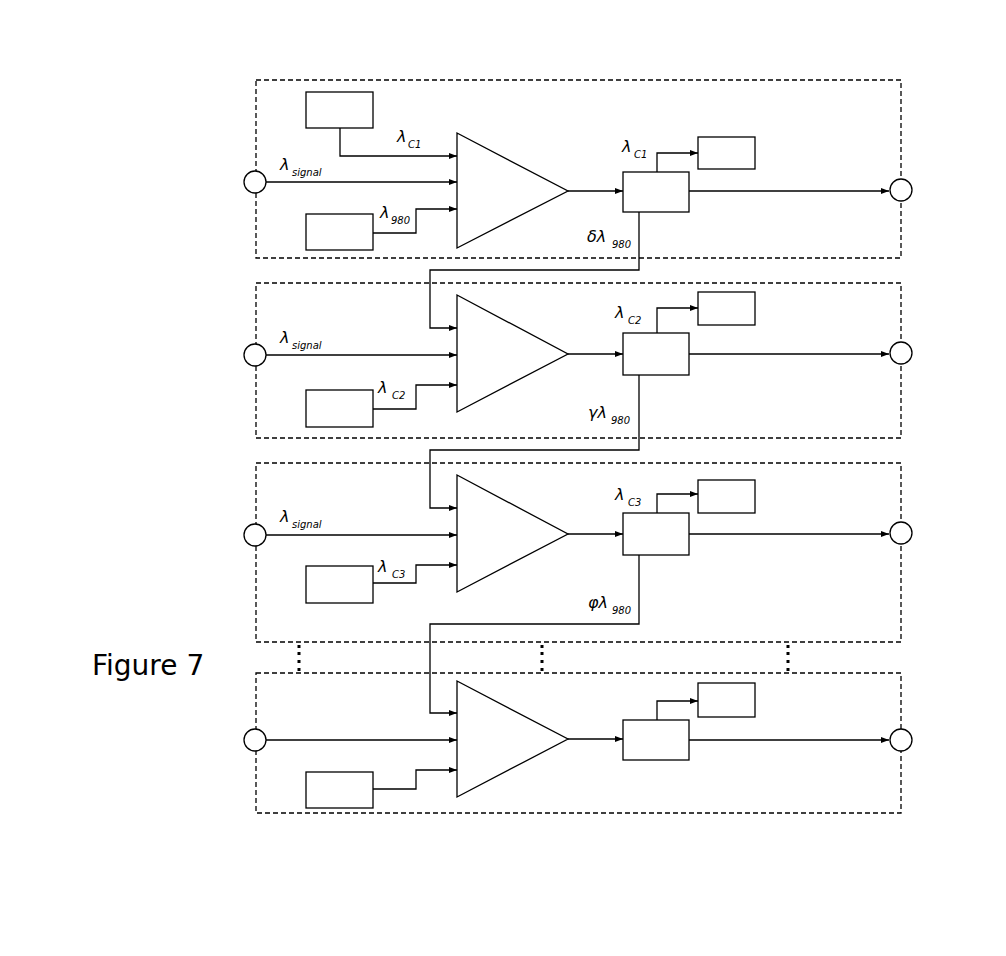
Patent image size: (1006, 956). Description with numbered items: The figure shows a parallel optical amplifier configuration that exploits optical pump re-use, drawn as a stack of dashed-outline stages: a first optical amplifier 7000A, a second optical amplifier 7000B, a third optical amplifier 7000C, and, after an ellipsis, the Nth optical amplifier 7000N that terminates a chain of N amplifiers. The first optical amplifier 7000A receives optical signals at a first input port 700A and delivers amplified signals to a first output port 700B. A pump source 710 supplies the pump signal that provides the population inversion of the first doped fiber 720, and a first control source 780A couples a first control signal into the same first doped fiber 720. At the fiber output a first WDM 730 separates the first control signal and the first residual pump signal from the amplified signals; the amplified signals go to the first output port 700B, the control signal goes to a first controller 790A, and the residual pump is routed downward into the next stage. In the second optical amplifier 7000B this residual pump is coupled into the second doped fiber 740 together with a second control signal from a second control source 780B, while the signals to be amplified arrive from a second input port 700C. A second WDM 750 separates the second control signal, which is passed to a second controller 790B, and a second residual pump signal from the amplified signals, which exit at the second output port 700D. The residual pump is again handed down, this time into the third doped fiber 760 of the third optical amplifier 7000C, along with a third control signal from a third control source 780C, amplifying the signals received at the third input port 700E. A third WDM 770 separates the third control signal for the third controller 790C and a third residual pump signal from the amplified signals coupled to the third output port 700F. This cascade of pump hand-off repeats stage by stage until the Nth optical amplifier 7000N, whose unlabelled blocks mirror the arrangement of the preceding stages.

The first input port 700A is at (225, 182).
The first output port 700B is at (932, 190).
The second input port 700C is at (225, 355).
The second output port 700D is at (932, 353).
The third input port 700E is at (225, 535).
The third output port 700F is at (931, 533).
The pump source 710 is at (381, 229).
The first doped fiber 720 is at (512, 190).
The first WDM 730 is at (656, 192).
The second doped fiber 740 is at (512, 353).
The second WDM 750 is at (656, 354).
The third doped fiber 760 is at (512, 533).
The third WDM 770 is at (656, 534).
The first control source 780A is at (381, 124).
The second control source 780B is at (381, 406).
The third control source 780C is at (381, 584).
The first controller 790A is at (726, 153).
The second controller 790B is at (726, 308).
The third controller 790C is at (726, 496).
The first optical amplifier 7000A is at (578, 169).
The second optical amplifier 7000B is at (578, 360).
The third optical amplifier 7000C is at (578, 552).
The Nth optical amplifier 7000N is at (578, 743).